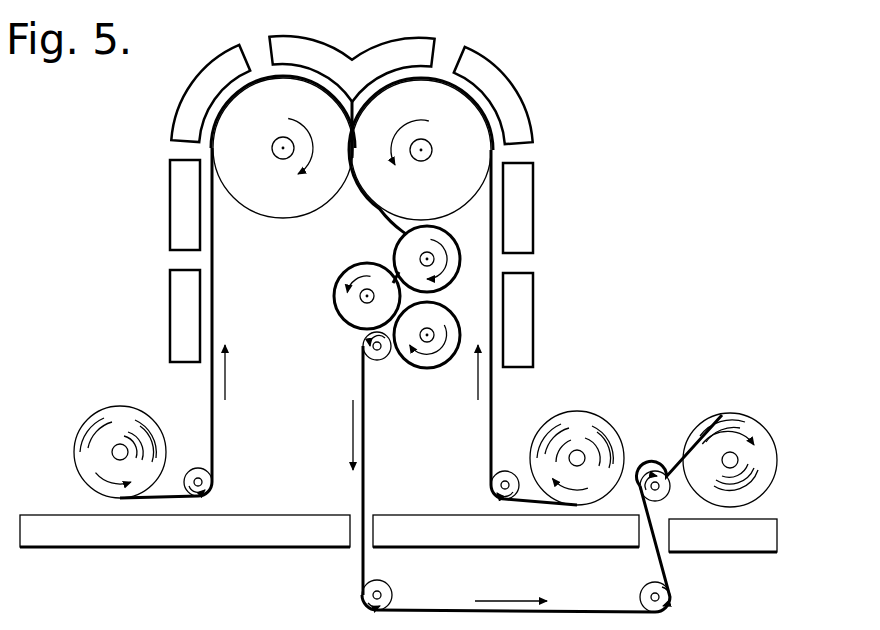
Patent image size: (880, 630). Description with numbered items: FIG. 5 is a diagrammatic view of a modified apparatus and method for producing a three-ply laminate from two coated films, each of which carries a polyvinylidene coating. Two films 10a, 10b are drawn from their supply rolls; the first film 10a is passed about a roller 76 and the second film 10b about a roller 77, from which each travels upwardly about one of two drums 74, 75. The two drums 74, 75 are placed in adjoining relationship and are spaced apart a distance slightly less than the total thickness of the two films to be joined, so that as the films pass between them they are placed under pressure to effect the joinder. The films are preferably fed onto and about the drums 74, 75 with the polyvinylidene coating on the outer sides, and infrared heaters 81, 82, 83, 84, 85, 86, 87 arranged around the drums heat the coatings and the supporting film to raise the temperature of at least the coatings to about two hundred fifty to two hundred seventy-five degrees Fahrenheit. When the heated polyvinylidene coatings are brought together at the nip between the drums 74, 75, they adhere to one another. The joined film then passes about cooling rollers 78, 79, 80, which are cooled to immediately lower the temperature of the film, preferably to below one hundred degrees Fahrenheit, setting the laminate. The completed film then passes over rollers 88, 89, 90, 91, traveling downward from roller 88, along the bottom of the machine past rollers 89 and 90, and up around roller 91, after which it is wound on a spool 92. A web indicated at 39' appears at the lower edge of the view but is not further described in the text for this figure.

The film 10a is at (130, 394).
The film 10b is at (590, 412).
The drum 74 is at (286, 191).
The drum 75 is at (424, 194).
The roller 76 is at (198, 468).
The roller 77 is at (504, 470).
The cooling roller 78 is at (405, 237).
The cooling roller 79 is at (355, 317).
The cooling roller 80 is at (430, 362).
The infrared heater 81 is at (176, 307).
The infrared heater 82 is at (176, 202).
The infrared heater 83 is at (191, 82).
The infrared heater 84 is at (358, 82).
The infrared heater 85 is at (514, 100).
The infrared heater 86 is at (526, 212).
The infrared heater 87 is at (527, 318).
The roller 88 is at (381, 356).
The roller 89 is at (385, 590).
The roller 90 is at (648, 586).
The roller 91 is at (667, 492).
The spool 92 is at (732, 413).
The web 39' is at (240, 622).